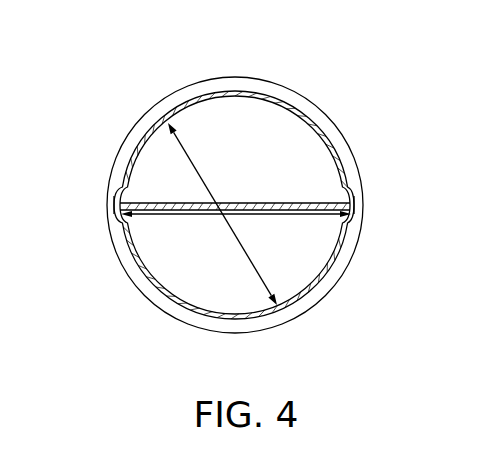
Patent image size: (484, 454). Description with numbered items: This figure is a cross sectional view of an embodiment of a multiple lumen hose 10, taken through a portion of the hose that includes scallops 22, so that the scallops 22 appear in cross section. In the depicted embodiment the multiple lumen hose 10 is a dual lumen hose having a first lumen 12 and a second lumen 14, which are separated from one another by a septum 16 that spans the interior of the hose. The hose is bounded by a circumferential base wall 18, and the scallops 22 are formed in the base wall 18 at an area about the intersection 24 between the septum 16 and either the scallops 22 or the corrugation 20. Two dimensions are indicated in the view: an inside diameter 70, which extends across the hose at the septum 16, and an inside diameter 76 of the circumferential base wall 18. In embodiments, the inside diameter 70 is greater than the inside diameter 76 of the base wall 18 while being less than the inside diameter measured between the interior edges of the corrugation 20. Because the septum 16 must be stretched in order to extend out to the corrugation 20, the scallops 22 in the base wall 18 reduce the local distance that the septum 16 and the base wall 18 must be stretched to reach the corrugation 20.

The multiple lumen hose 10 is at (107, 28).
The first lumen 12 is at (268, 152).
The second lumen 14 is at (272, 269).
The septum 16 is at (256, 202).
The circumferential base wall 18 is at (290, 110).
The corrugation 20 is at (350, 148).
The scallops 22 is at (114, 202).
The intersection 24 is at (124, 198).
The inside diameter 70 is at (200, 217).
The inside diameter 76 is at (192, 162).